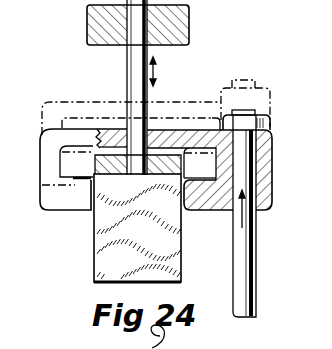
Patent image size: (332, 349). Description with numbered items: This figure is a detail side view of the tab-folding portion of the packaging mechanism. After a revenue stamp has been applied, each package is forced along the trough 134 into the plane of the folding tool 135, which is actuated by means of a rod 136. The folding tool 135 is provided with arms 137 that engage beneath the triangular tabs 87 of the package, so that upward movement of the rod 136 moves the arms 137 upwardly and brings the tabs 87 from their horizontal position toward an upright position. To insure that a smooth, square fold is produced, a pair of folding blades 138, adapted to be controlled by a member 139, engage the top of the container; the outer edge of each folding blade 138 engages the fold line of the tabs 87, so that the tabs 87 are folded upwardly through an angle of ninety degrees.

The trough 134 is at (300, 3).
The member 139 is at (146, 96).
The arms 137 is at (62, 199).
The triangular tabs 87 is at (80, 178).
The folding tool 135 is at (263, 167).
The folding blades 138 is at (167, 174).
The rod 136 is at (260, 258).